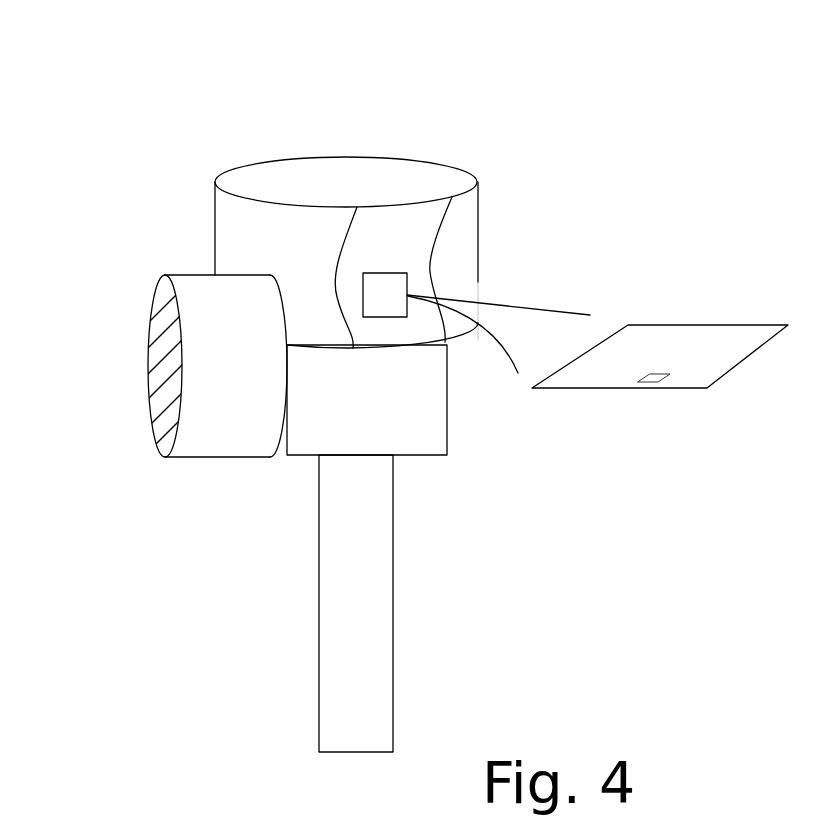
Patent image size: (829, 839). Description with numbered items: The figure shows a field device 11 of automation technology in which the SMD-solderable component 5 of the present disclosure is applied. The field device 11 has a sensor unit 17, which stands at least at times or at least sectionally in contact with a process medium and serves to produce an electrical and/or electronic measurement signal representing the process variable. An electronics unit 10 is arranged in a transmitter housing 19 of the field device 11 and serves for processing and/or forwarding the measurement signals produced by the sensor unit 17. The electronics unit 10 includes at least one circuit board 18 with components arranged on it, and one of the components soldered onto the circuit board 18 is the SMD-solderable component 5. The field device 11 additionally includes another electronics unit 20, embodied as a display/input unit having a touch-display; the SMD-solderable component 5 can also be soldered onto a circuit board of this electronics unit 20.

The field device 11 is at (540, 102).
The transmitter housing 19 is at (218, 232).
The electronics unit 10 is at (476, 323).
The another electronics unit 20 is at (155, 376).
The sensor unit 17 is at (341, 604).
The circuit board 18 is at (610, 392).
The SMD-solderable component 5 is at (658, 385).